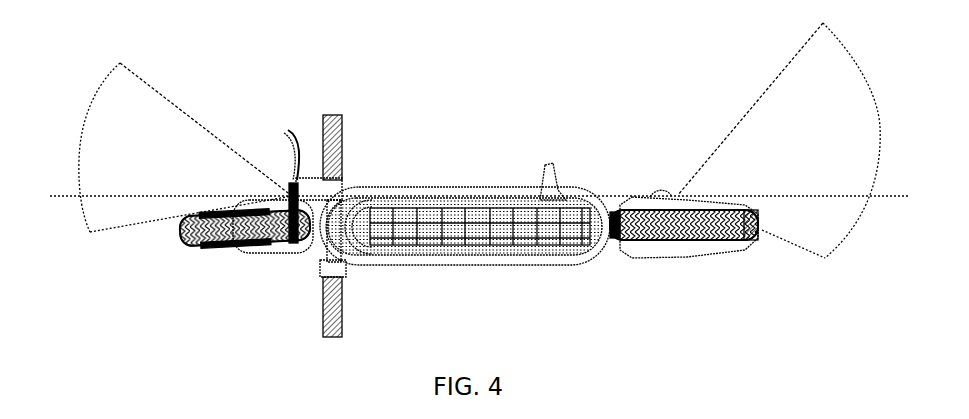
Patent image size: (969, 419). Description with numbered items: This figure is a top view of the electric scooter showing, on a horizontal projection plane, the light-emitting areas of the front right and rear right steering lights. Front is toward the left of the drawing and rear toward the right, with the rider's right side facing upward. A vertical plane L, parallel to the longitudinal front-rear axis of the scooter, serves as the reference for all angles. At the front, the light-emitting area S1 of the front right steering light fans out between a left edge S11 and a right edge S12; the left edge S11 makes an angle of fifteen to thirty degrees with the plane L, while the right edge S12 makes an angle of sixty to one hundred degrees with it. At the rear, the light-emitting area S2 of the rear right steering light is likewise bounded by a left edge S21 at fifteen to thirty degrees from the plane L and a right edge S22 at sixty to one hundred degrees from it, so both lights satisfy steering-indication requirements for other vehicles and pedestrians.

The vertical plane L is at (471, 200).
The light-emitting area of the front right steering light S1 is at (90, 138).
The left edge of light-emitting area S1 S11 is at (137, 222).
The right edge of light-emitting area S1 S12 is at (163, 100).
The light-emitting area of the rear right steering light S2 is at (857, 88).
The left edge of light-emitting area S2 S21 is at (793, 247).
The right edge of light-emitting area S2 S22 is at (760, 93).